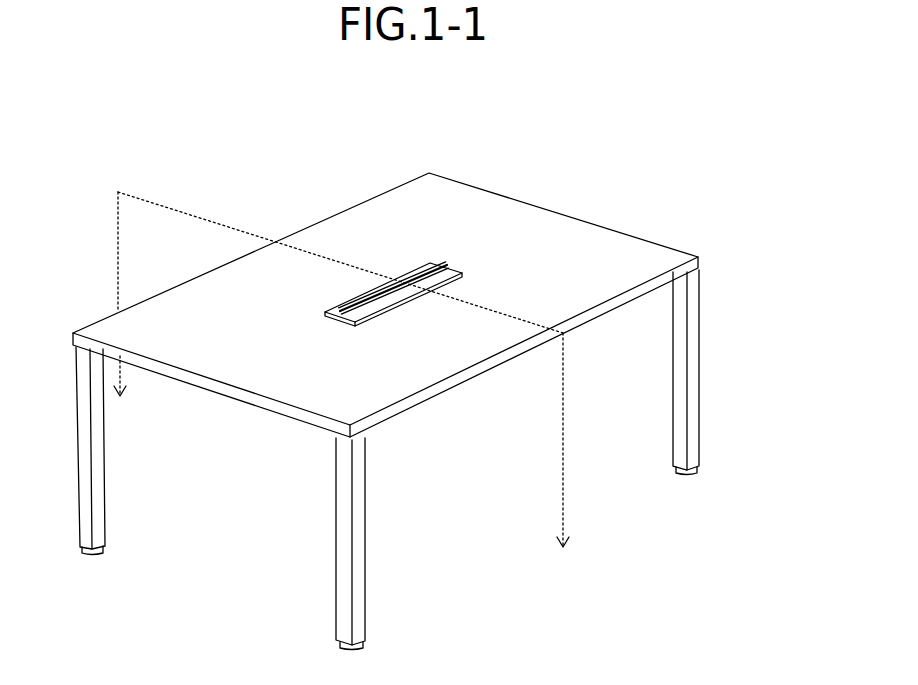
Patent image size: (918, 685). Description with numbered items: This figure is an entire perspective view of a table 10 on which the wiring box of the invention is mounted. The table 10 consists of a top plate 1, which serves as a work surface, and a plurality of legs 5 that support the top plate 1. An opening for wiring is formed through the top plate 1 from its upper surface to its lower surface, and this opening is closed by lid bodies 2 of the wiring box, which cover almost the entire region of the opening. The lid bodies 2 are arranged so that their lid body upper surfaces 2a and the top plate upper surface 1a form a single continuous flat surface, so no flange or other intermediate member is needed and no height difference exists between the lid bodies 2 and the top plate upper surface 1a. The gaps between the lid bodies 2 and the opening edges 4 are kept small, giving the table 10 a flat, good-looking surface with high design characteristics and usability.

The table 10 is at (411, 365).
The top plate 1 is at (385, 259).
The top plate upper surface 1a is at (603, 250).
The opening edges 4 is at (374, 290).
The lid bodies 2 is at (363, 298).
The lid body upper surfaces 2a is at (338, 310).
The legs 5 is at (98, 452).